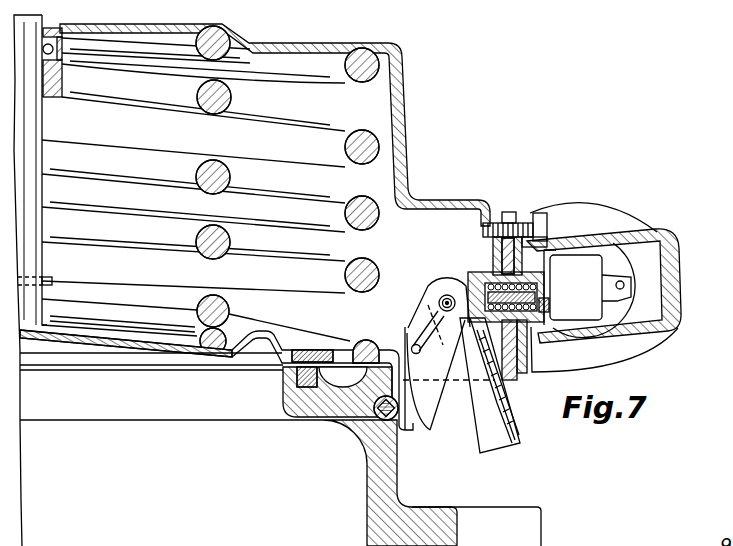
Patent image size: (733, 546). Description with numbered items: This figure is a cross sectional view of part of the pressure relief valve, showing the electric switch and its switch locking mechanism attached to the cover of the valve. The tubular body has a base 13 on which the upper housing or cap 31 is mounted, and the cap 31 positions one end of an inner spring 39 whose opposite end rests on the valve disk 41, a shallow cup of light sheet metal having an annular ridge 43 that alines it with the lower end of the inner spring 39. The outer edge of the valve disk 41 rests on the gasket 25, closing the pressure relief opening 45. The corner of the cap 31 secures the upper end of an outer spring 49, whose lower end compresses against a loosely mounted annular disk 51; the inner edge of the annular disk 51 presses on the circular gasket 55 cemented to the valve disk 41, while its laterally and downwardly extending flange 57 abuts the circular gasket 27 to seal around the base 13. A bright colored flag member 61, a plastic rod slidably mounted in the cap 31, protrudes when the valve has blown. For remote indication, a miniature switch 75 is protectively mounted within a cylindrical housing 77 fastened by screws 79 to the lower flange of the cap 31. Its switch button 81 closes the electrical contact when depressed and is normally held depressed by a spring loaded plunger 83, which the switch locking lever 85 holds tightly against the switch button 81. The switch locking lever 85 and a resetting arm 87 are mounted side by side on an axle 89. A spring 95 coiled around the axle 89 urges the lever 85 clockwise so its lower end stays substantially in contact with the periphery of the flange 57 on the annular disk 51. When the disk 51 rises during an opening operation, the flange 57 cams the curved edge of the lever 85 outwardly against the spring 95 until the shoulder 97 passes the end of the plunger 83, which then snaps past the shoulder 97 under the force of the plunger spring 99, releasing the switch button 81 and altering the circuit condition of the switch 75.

The base 13 is at (373, 487).
The gasket 25 is at (297, 380).
The circular gasket 27 is at (377, 413).
The upper housing or cap 31 is at (404, 96).
The inner spring 39 is at (228, 97).
The valve disk 41 is at (63, 340).
The annular ridge 43 is at (250, 336).
The pressure relief opening 45 is at (138, 396).
The outer spring 49 is at (323, 128).
The annular disk 51 is at (353, 344).
The circular gasket 55 is at (291, 350).
The flange 57 is at (405, 433).
The flag member 61 is at (37, 120).
The miniature switch 75 is at (570, 260).
The cylindrical housing 77 is at (647, 233).
The screws 79 is at (538, 216).
The switch button 81 is at (468, 287).
The spring loaded plunger 83 is at (495, 297).
The switch locking lever 85 is at (405, 327).
The resetting arm 87 is at (500, 438).
The axle 89 is at (442, 298).
The spring 95 is at (423, 318).
The shoulder 97 is at (446, 344).
The plunger spring 99 is at (548, 305).